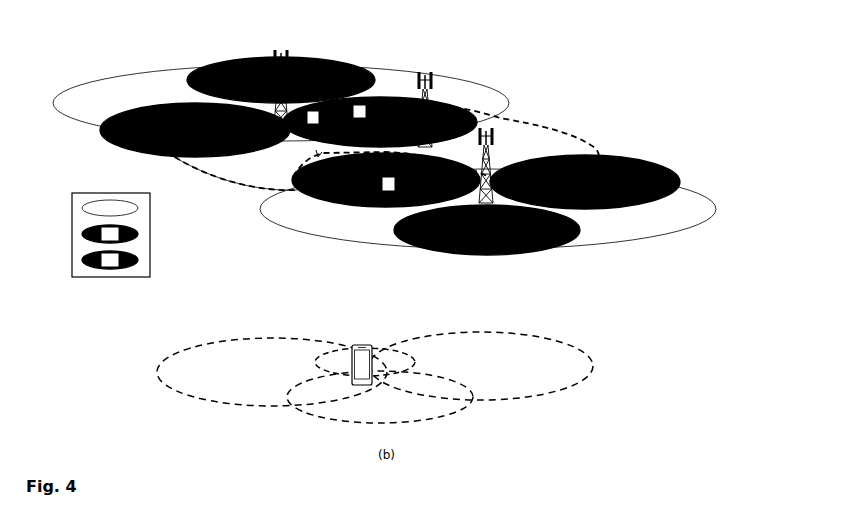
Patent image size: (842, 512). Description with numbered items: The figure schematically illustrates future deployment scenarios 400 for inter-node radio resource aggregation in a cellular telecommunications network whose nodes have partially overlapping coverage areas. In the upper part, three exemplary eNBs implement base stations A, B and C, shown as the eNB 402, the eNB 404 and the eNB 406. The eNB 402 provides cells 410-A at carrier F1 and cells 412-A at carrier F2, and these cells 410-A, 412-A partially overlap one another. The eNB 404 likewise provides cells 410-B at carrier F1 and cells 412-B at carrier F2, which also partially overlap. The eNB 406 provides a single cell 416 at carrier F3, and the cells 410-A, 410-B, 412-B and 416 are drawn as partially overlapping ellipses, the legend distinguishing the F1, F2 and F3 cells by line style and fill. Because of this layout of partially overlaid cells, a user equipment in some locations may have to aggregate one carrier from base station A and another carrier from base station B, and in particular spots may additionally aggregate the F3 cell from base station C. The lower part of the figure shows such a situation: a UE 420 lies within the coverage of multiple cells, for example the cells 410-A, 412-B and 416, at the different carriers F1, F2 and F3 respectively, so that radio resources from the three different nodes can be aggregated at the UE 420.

The deployment scenarios 400 is at (59, 55).
The eNB A 402 is at (274, 54).
The eNB B 404 is at (493, 142).
The eNB C 406 is at (433, 82).
The cells at carrier F1 410-A is at (507, 103).
The cells at carrier F1 410-B is at (664, 232).
The cells at carrier F2 412-A is at (308, 57).
The cells at carrier F2 412-B is at (638, 157).
The cell at carrier F3 416 is at (392, 98).
The UE 420 is at (363, 345).